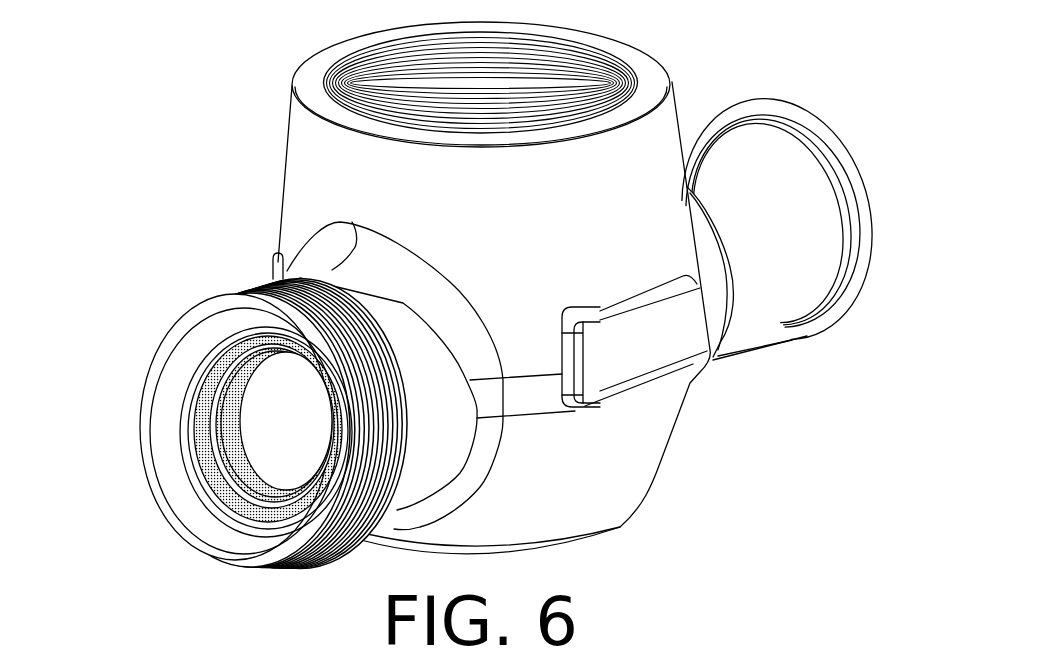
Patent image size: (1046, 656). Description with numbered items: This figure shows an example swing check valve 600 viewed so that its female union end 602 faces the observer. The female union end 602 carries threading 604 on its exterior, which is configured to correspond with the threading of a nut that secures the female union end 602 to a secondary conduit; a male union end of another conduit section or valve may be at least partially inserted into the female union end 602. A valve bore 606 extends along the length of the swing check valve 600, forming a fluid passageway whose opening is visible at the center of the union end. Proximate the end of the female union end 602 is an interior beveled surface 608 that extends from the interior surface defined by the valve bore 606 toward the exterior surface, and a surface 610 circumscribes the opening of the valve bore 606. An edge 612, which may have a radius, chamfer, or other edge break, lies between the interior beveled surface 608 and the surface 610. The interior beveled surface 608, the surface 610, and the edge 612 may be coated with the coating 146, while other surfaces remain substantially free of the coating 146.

The swing check valve 600 is at (475, 330).
The female union end 602 is at (261, 414).
The threading 604 is at (237, 297).
The coating 146 is at (212, 372).
The valve bore 606 is at (245, 407).
The interior beveled surface 608 is at (243, 463).
The surface 610 is at (260, 503).
The edge 612 is at (290, 497).